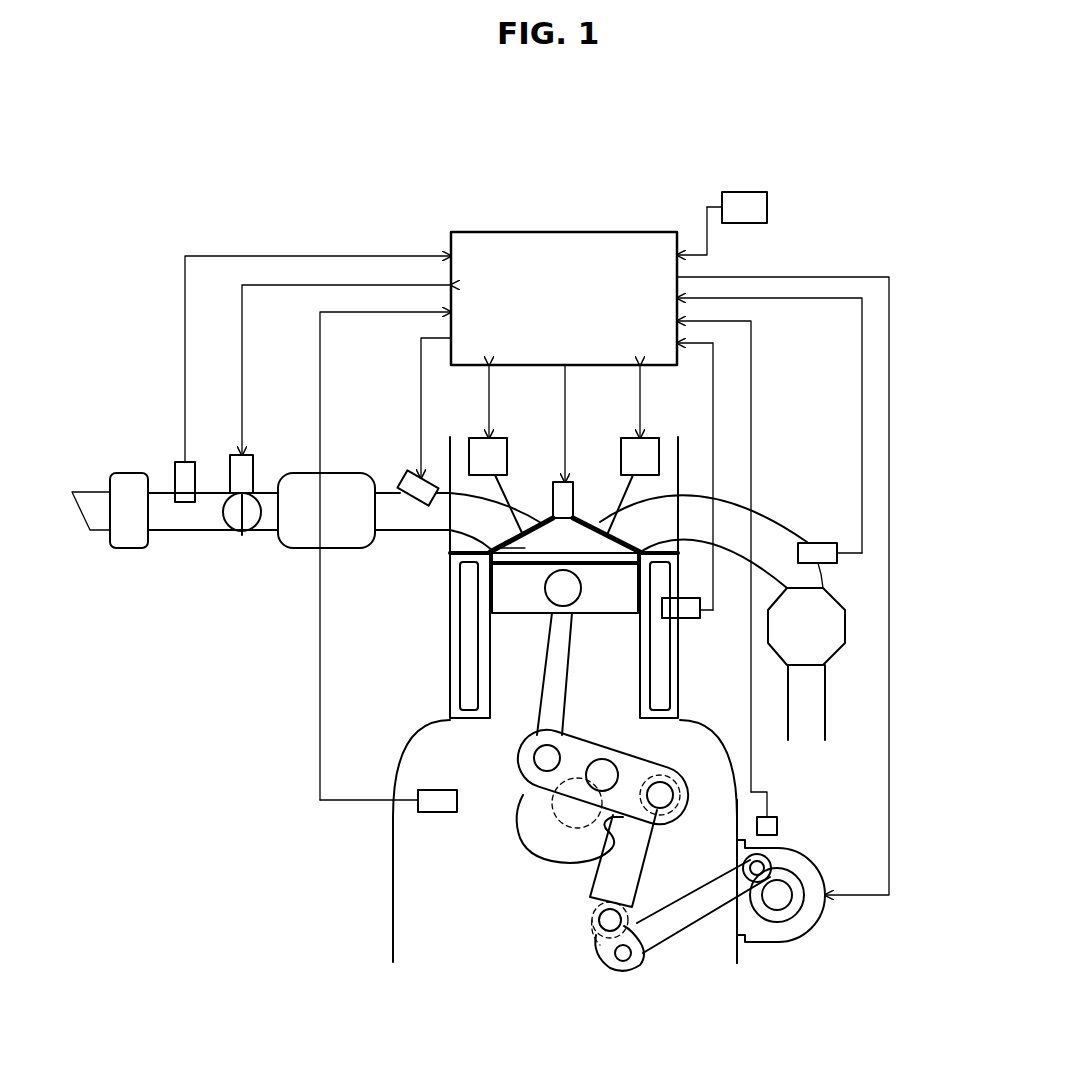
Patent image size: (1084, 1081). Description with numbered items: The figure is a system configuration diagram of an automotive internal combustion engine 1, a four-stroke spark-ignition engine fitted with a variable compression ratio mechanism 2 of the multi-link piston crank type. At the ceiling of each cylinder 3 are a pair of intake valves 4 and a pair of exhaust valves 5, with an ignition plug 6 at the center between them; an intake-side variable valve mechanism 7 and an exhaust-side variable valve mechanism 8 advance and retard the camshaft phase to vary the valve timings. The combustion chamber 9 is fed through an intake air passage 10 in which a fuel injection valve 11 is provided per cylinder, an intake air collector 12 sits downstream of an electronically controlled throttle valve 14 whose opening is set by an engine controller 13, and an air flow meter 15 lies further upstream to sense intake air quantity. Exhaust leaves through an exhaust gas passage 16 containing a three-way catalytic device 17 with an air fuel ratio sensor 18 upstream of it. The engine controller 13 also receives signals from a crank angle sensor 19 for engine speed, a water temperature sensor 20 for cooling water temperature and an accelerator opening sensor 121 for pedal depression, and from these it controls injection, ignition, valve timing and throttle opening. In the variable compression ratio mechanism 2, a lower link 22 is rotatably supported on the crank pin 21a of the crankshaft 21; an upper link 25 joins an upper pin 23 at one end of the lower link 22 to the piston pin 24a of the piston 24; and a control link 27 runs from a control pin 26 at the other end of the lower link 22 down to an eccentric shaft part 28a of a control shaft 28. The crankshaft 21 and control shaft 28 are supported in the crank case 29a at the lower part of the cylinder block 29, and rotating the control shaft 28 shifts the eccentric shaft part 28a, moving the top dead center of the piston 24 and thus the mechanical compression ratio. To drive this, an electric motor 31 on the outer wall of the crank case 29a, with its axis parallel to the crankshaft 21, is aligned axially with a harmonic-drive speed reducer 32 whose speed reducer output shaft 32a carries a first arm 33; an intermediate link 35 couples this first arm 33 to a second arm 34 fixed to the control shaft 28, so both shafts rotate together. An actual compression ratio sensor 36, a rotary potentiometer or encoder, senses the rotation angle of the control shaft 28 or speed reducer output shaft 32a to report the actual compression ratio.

The internal combustion engine 1 is at (345, 920).
The variable compression ratio mechanism 2 is at (455, 965).
The cylinder 3 is at (543, 700).
The intake valve 4 is at (526, 535).
The exhaust valve 5 is at (590, 535).
The ignition plug 6 is at (566, 480).
The intake-side variable valve mechanism 7 is at (480, 443).
The exhaust-side variable valve mechanism 8 is at (622, 443).
The combustion chamber 9 is at (458, 565).
The intake air passage 10 is at (390, 527).
The fuel injection valve 11 is at (405, 480).
The intake air collector 12 is at (297, 545).
The engine controller 13 is at (553, 243).
The throttle valve 14 is at (238, 522).
The air flow meter 15 is at (175, 468).
The exhaust gas passage 16 is at (770, 520).
The catalytic device 17 is at (830, 658).
The air fuel ratio sensor 18 is at (818, 543).
The crank angle sensor 19 is at (440, 812).
The water temperature sensor 20 is at (680, 610).
The crankshaft 21 is at (535, 830).
The crank pin 21a is at (602, 768).
The lower link 22 is at (603, 762).
The upper pin 23 is at (540, 758).
The piston 24 is at (520, 603).
The piston pin 24a is at (572, 598).
The upper link 25 is at (550, 640).
The control pin 26 is at (666, 795).
The control link 27 is at (645, 858).
The control shaft 28 is at (590, 930).
The eccentric shaft part 28a is at (598, 917).
The cylinder block 29 is at (452, 712).
The crank case 29a is at (425, 750).
The electric motor 31 is at (810, 920).
The speed reducer 32 is at (790, 905).
The speed reducer output shaft 32a is at (775, 895).
The first arm 33 is at (768, 872).
The second arm 34 is at (610, 950).
The intermediate link 35 is at (682, 928).
The actual compression ratio sensor 36 is at (777, 828).
The accelerator opening sensor 121 is at (767, 207).